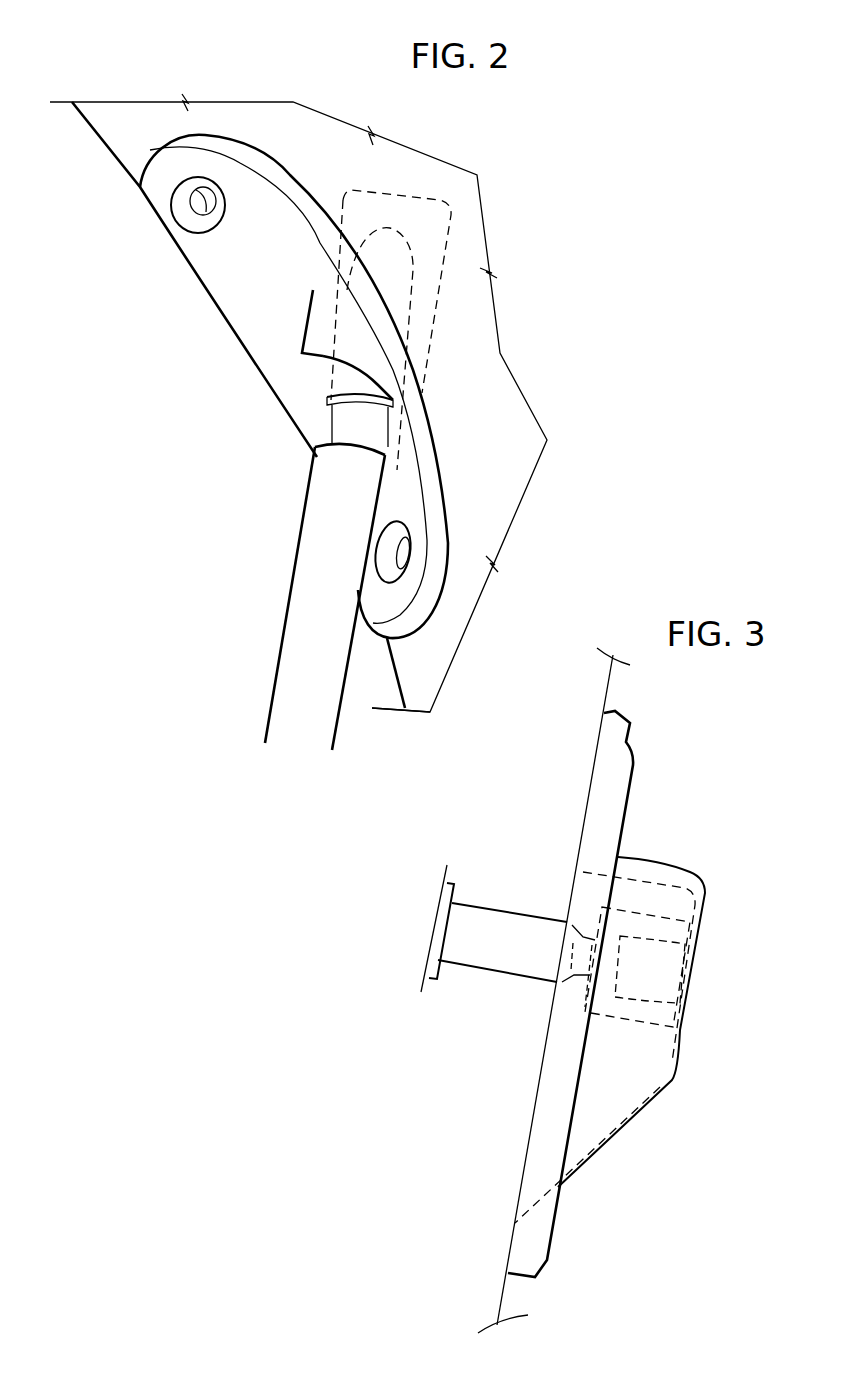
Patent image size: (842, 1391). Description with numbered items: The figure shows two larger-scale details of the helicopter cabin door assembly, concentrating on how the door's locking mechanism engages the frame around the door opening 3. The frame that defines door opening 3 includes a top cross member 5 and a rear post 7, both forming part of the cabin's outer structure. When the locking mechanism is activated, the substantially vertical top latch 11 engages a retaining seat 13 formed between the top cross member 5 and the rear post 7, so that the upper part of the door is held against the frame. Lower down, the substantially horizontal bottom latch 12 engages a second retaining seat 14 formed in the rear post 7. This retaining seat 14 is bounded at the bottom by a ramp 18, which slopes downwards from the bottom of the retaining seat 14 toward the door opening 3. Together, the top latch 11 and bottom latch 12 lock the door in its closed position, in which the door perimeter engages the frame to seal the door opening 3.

In FIG. 2, the top cross member 5 is at (117, 115).
In FIG. 2, the door opening 3 is at (268, 358).
In FIG. 3, the door opening 3 is at (508, 1248).
In FIG. 2, the rear post 7 is at (412, 673).
In FIG. 3, the rear post 7 is at (595, 777).
In FIG. 2, the top latch 11 is at (355, 430).
In FIG. 2, the retaining seat 13 is at (398, 418).
In FIG. 3, the bottom latch 12 is at (492, 960).
In FIG. 3, the ramp 18 is at (593, 1144).
In FIG. 3, the retaining seat 14 is at (673, 1040).